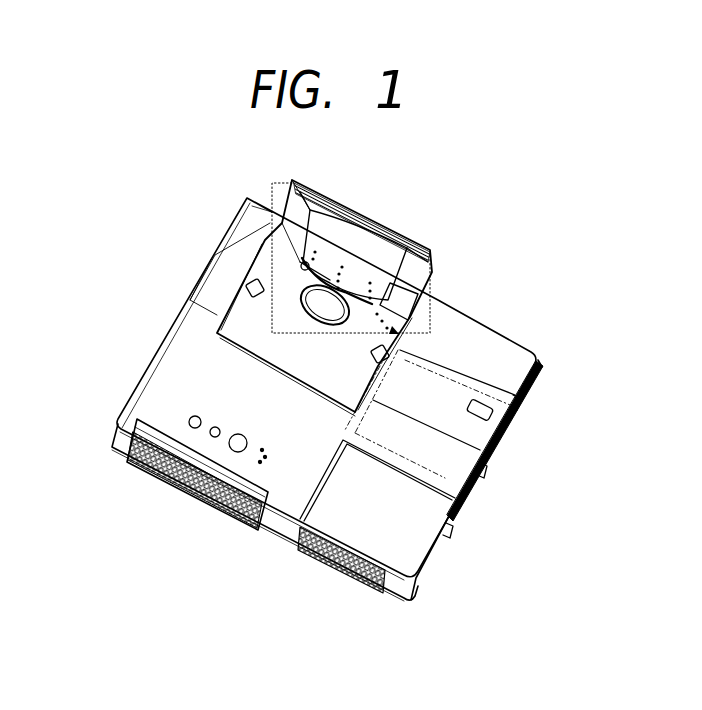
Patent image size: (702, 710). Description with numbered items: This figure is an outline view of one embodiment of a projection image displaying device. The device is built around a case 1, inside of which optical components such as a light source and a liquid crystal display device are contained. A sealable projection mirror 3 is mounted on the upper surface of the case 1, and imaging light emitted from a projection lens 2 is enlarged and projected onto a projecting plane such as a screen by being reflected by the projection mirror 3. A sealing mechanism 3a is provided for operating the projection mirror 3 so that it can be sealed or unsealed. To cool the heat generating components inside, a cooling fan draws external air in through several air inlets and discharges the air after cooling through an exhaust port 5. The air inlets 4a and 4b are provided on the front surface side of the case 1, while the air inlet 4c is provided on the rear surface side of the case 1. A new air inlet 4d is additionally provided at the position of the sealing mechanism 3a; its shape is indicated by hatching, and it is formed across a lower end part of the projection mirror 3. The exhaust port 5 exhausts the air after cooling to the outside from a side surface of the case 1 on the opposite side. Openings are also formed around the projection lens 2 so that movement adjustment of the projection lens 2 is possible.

The case 1 is at (502, 333).
The projection lens 2 is at (327, 305).
The projection mirror 3 is at (372, 253).
The sealing mechanism 3a is at (402, 302).
The air inlet 4a is at (170, 455).
The air inlet 4b is at (330, 560).
The air inlet 4c is at (193, 332).
The air inlet 4d is at (302, 262).
The exhaust port 5 is at (500, 434).